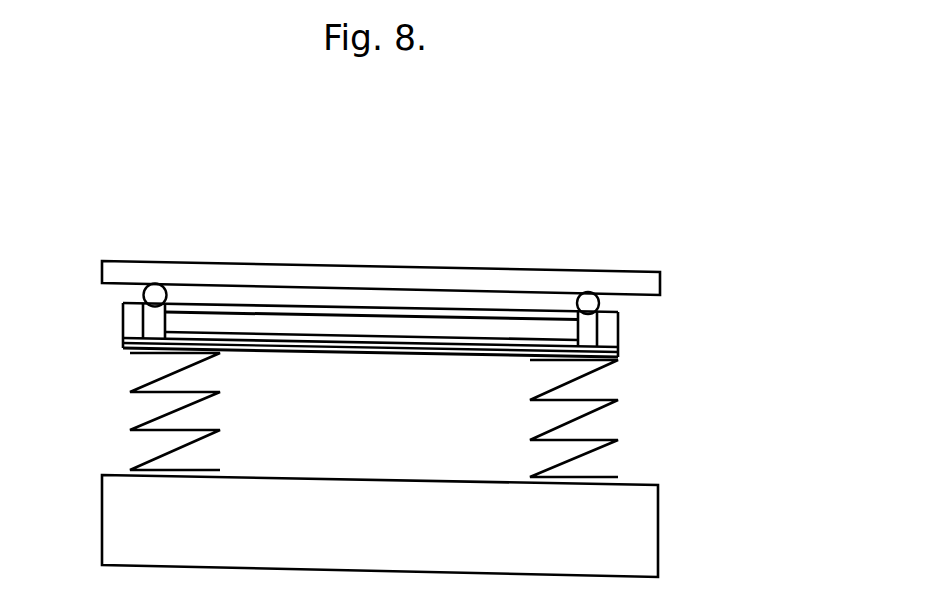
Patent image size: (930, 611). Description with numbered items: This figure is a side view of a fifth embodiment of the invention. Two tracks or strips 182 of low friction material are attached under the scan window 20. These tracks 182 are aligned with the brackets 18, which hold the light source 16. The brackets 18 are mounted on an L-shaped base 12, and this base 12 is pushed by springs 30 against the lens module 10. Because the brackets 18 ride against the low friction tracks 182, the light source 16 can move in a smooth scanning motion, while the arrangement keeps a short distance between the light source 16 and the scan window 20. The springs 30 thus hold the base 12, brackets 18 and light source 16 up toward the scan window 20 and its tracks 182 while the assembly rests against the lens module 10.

The lens module 10 is at (380, 526).
The L-shaped base 12 is at (122, 347).
The light source 16 is at (290, 327).
The brackets 18 is at (592, 333).
The tracks 182 is at (597, 308).
The scan window 20 is at (620, 280).
The springs 30 is at (617, 442).